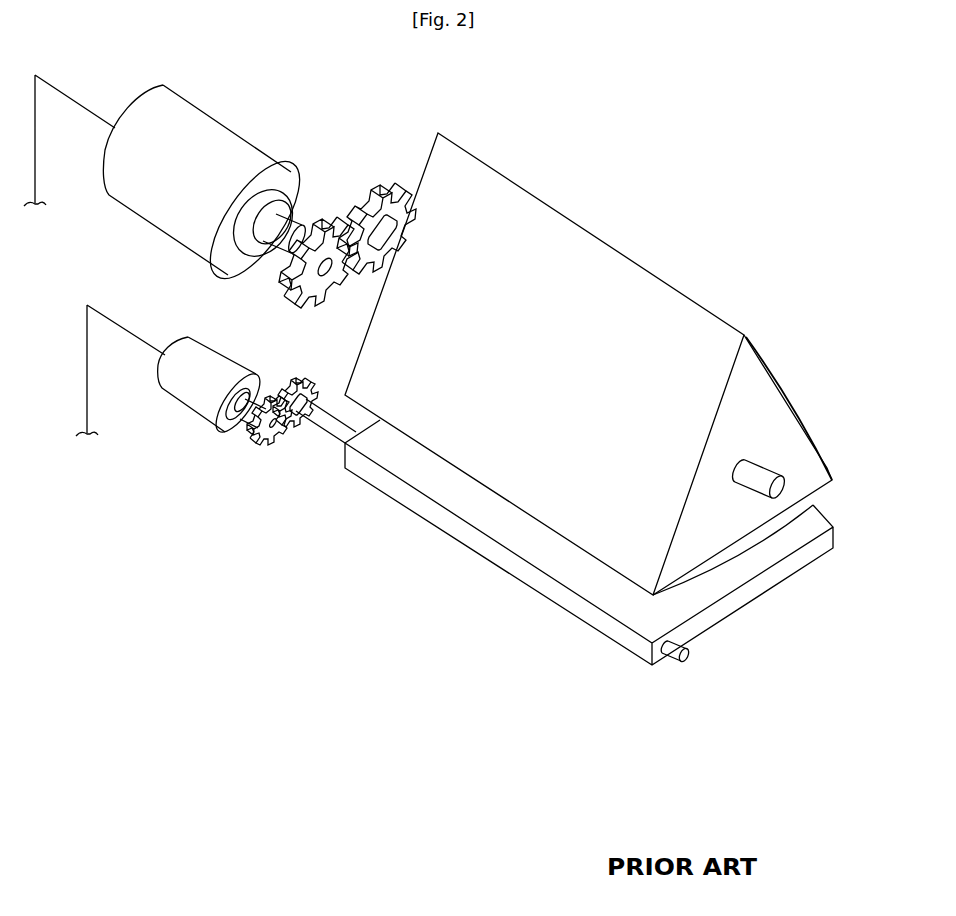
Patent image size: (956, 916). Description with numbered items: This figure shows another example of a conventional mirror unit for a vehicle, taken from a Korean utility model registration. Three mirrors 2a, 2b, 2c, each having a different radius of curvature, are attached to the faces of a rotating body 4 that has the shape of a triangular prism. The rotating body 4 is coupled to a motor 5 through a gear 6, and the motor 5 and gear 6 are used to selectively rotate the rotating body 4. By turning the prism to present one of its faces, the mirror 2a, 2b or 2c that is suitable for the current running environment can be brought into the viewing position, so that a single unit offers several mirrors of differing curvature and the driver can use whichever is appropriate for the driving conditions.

The motor 5 is at (163, 198).
The gear 6 is at (370, 180).
The mirror 2a is at (547, 253).
The rotating body 4 is at (752, 371).
The mirror 2c is at (797, 403).
The mirror 2b is at (735, 560).